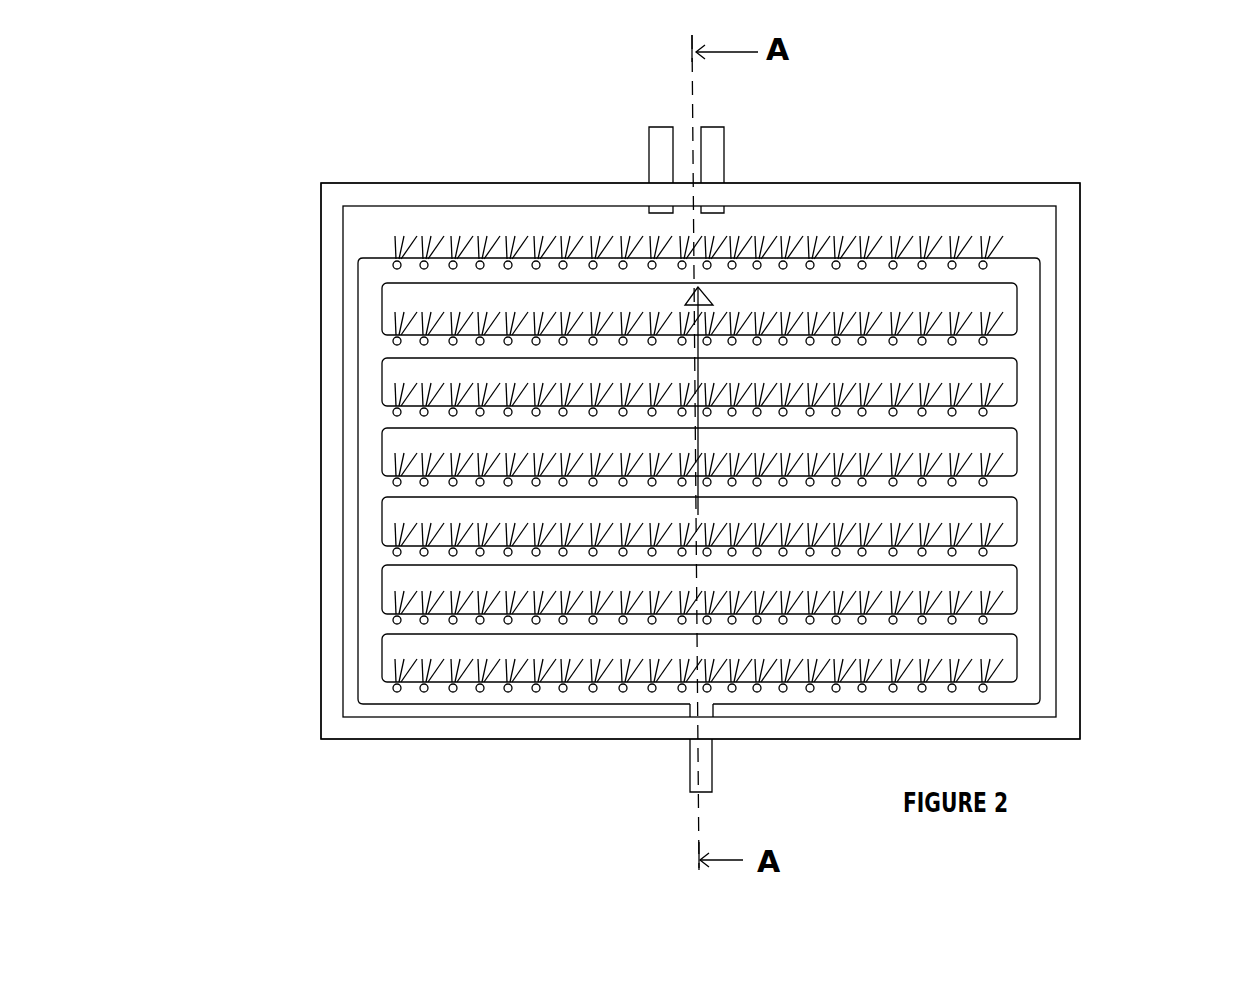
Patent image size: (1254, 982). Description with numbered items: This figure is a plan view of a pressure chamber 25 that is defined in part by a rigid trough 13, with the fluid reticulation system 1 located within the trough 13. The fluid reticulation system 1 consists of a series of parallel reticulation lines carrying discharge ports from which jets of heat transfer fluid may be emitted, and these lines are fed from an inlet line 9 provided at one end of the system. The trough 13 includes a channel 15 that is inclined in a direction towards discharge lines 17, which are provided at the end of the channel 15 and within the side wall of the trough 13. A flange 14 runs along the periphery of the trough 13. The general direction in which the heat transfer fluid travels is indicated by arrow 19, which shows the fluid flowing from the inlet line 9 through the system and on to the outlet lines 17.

The fluid reticulation system 1 is at (382, 252).
The inlet line 9 is at (688, 767).
The rigid trough 13 is at (1035, 240).
The flange 14 is at (752, 461).
The channel 15 is at (762, 305).
The discharge lines 17 is at (713, 160).
The arrow 19 is at (965, 401).
The pressure chamber 25 is at (295, 410).